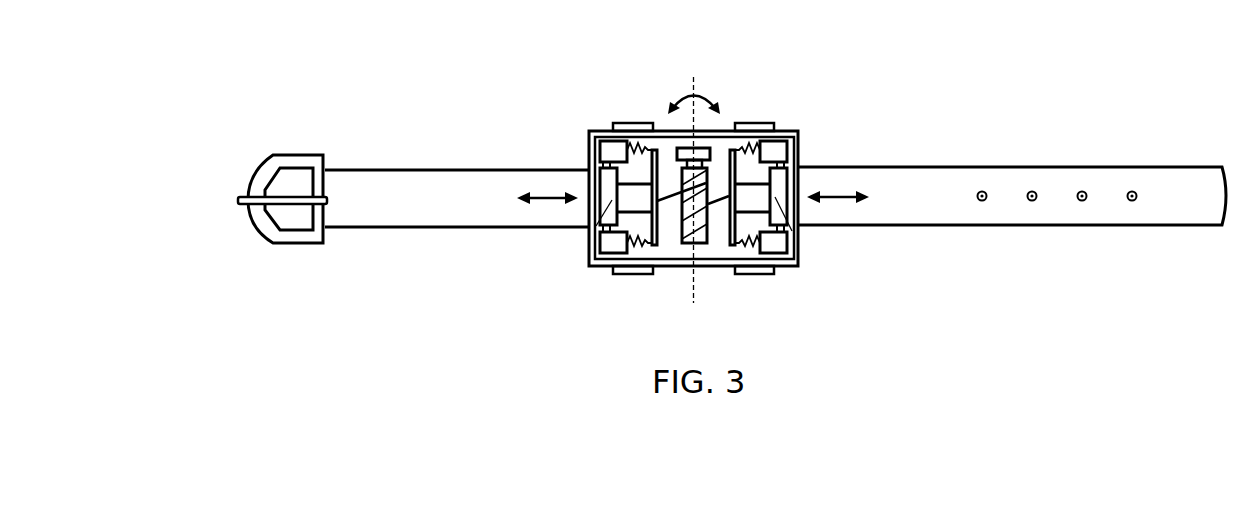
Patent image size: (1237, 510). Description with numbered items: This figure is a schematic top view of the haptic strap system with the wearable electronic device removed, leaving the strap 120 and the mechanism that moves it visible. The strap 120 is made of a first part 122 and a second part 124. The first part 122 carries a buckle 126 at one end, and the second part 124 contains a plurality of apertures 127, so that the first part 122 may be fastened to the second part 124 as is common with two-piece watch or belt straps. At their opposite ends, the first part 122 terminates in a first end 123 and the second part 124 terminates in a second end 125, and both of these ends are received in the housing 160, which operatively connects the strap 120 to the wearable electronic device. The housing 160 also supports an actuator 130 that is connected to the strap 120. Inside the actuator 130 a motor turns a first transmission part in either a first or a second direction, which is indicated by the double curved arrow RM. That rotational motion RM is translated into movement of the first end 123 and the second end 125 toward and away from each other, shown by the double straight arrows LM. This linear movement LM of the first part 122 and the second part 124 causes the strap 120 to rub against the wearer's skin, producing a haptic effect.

The strap 120 is at (710, 171).
The first part 122 is at (460, 170).
The first end 123 is at (589, 226).
The second part 124 is at (962, 167).
The second end 125 is at (798, 236).
The buckle 126 is at (270, 162).
The apertures 127 is at (984, 204).
The actuator 130 is at (697, 179).
The housing 160 is at (595, 130).
The linear movement LM is at (550, 193).
The rotational motion RM is at (708, 88).